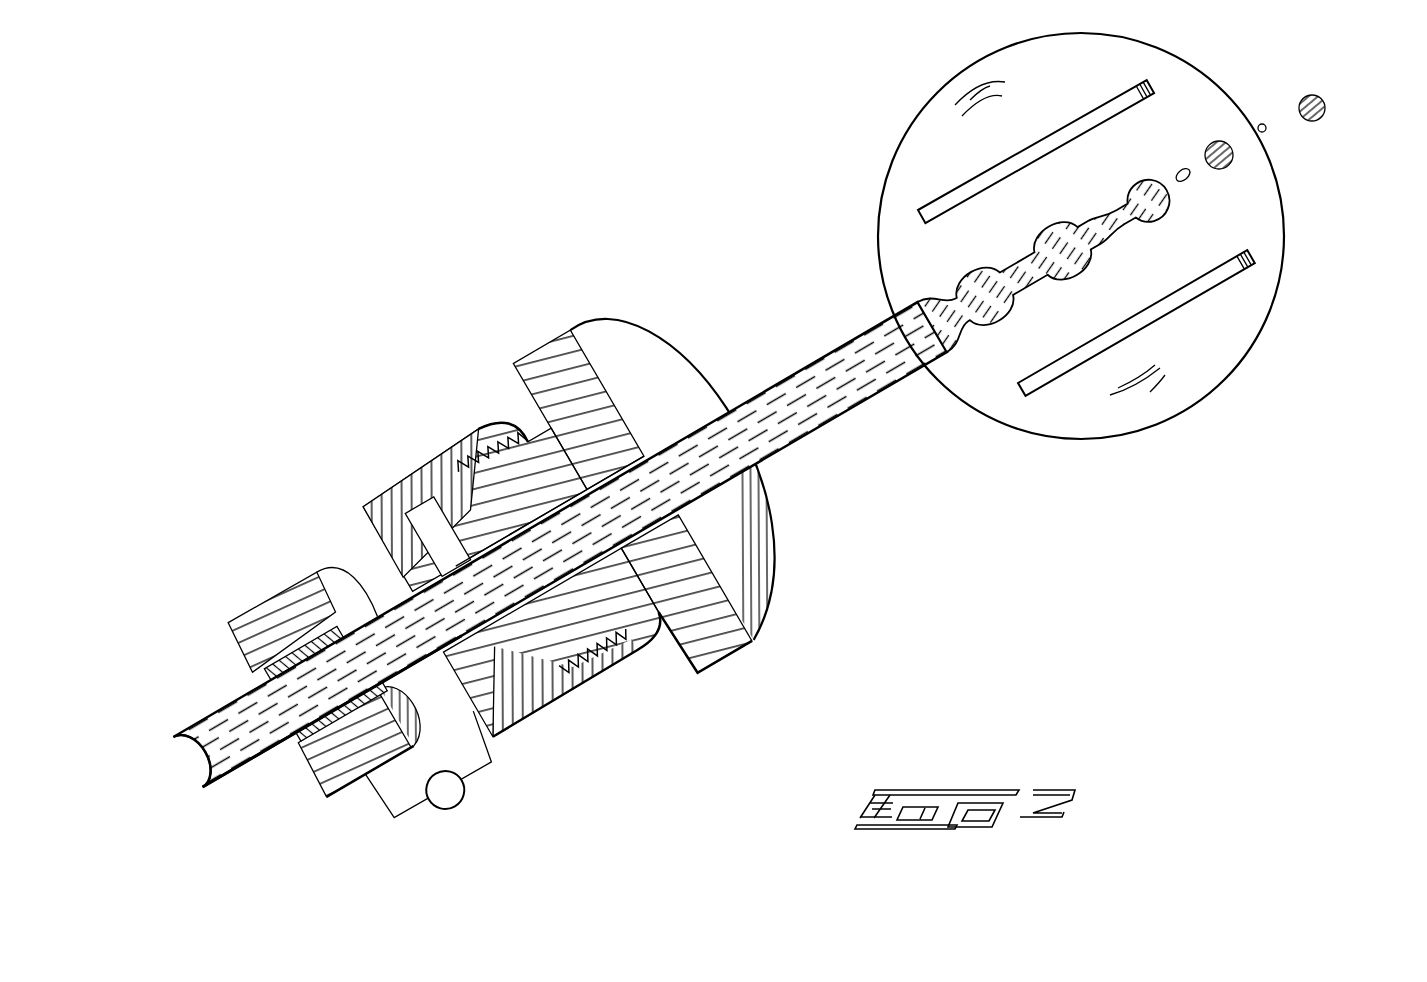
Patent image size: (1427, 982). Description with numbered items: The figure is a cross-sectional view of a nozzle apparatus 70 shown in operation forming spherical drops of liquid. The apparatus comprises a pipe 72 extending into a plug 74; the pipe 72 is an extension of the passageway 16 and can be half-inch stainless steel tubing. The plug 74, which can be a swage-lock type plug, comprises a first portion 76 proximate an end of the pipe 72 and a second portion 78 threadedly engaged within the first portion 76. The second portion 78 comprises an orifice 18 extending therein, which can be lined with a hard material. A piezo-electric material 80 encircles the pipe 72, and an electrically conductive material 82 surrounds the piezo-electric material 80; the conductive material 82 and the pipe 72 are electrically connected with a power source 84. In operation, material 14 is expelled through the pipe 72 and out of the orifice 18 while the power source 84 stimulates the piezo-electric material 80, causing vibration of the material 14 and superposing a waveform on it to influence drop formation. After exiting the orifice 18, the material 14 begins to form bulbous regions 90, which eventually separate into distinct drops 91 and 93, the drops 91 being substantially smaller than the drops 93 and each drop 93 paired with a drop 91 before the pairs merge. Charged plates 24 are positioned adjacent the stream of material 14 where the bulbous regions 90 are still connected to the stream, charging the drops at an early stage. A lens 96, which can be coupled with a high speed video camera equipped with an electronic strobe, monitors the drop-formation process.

The material 14 is at (806, 410).
The passageway 16 is at (255, 738).
The orifice 18 is at (655, 483).
The charged plates 24 is at (938, 197).
The nozzle apparatus 70 is at (335, 468).
The pipe 72 is at (238, 778).
The plug 74 is at (628, 700).
The first portion 76 is at (538, 700).
The second portion 78 is at (714, 605).
The piezo-electric material 80 is at (262, 674).
The electrically conductive material 82 is at (268, 605).
The power source 84 is at (465, 793).
The bulbous regions 90 is at (992, 256).
The drops 91 is at (1261, 120).
The drops 93 is at (1240, 162).
The lens 96 is at (1236, 366).